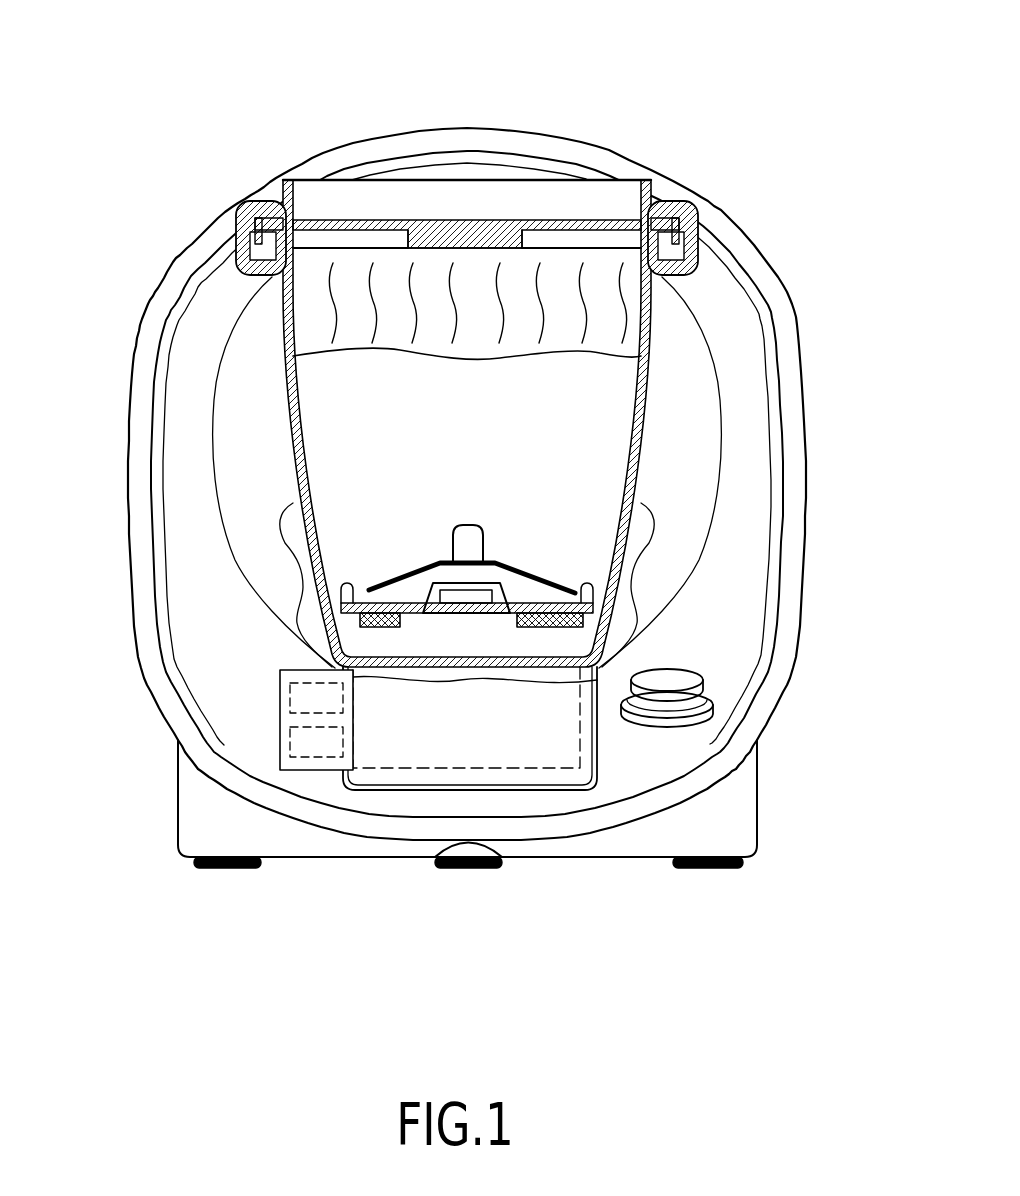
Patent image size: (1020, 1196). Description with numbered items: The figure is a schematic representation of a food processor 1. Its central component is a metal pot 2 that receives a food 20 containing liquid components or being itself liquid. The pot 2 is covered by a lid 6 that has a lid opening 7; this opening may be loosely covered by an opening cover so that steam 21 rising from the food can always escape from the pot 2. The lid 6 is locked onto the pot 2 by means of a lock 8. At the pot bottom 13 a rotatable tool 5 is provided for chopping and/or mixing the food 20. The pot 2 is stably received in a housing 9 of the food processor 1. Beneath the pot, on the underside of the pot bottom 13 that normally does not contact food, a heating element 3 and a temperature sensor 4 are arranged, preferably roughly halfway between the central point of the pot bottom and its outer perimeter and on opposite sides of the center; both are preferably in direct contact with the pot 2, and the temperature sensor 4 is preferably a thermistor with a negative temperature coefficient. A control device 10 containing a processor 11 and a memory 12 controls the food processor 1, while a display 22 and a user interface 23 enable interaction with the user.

The food processor 1 is at (116, 935).
The pot 2 is at (649, 402).
The heating element 3 is at (540, 628).
The temperature sensor 4 is at (376, 628).
The rotatable tool 5 is at (523, 587).
The lid 6 is at (328, 202).
The lid opening 7 is at (510, 237).
The lock 8 is at (246, 222).
The housing 9 is at (195, 798).
The control device 10 is at (194, 714).
The processor 11 is at (316, 698).
The memory 12 is at (316, 742).
The pot bottom 13 is at (617, 607).
The food 20 is at (480, 452).
The steam 21 is at (330, 300).
The display 22 is at (513, 775).
The user interface 23 is at (645, 758).